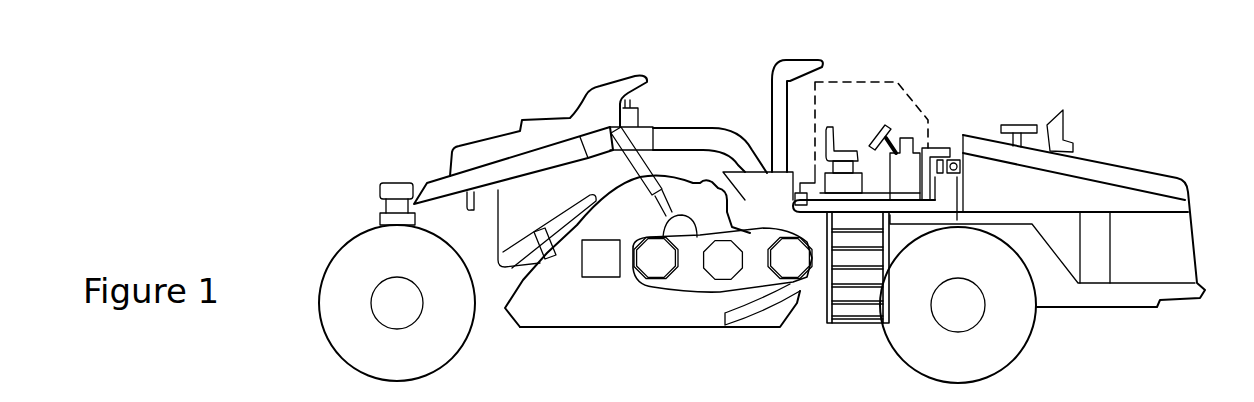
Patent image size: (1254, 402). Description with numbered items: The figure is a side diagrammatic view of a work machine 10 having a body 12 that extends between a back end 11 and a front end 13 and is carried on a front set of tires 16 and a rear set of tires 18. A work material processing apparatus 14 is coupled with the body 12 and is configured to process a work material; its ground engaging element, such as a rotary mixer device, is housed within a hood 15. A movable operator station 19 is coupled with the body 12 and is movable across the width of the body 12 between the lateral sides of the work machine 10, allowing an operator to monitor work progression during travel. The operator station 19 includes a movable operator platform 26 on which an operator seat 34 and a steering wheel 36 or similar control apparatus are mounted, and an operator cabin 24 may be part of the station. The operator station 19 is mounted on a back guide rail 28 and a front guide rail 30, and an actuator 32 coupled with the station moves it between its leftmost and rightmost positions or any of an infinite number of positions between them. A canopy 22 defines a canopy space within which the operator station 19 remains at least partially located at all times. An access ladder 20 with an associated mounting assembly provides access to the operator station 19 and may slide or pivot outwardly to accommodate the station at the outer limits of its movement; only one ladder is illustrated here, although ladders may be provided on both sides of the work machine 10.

The work machine 10 is at (458, 94).
The back end 11 is at (375, 209).
The body 12 is at (428, 183).
The front end 13 is at (1185, 170).
The work material processing apparatus 14 is at (690, 340).
The hood 15 is at (605, 321).
The front set of tires 16 is at (1025, 334).
The rear set of tires 18 is at (455, 333).
The movable operator station 19 is at (839, 92).
The access ladder 20 is at (832, 327).
The canopy 22 is at (775, 77).
The operator cabin 24 is at (903, 88).
The movable operator platform 26 is at (922, 208).
The back guide rail 28 is at (762, 160).
The front guide rail 30 is at (938, 180).
The actuator 32 is at (953, 160).
The operator seat 34 is at (833, 137).
The steering wheel 36 is at (890, 130).